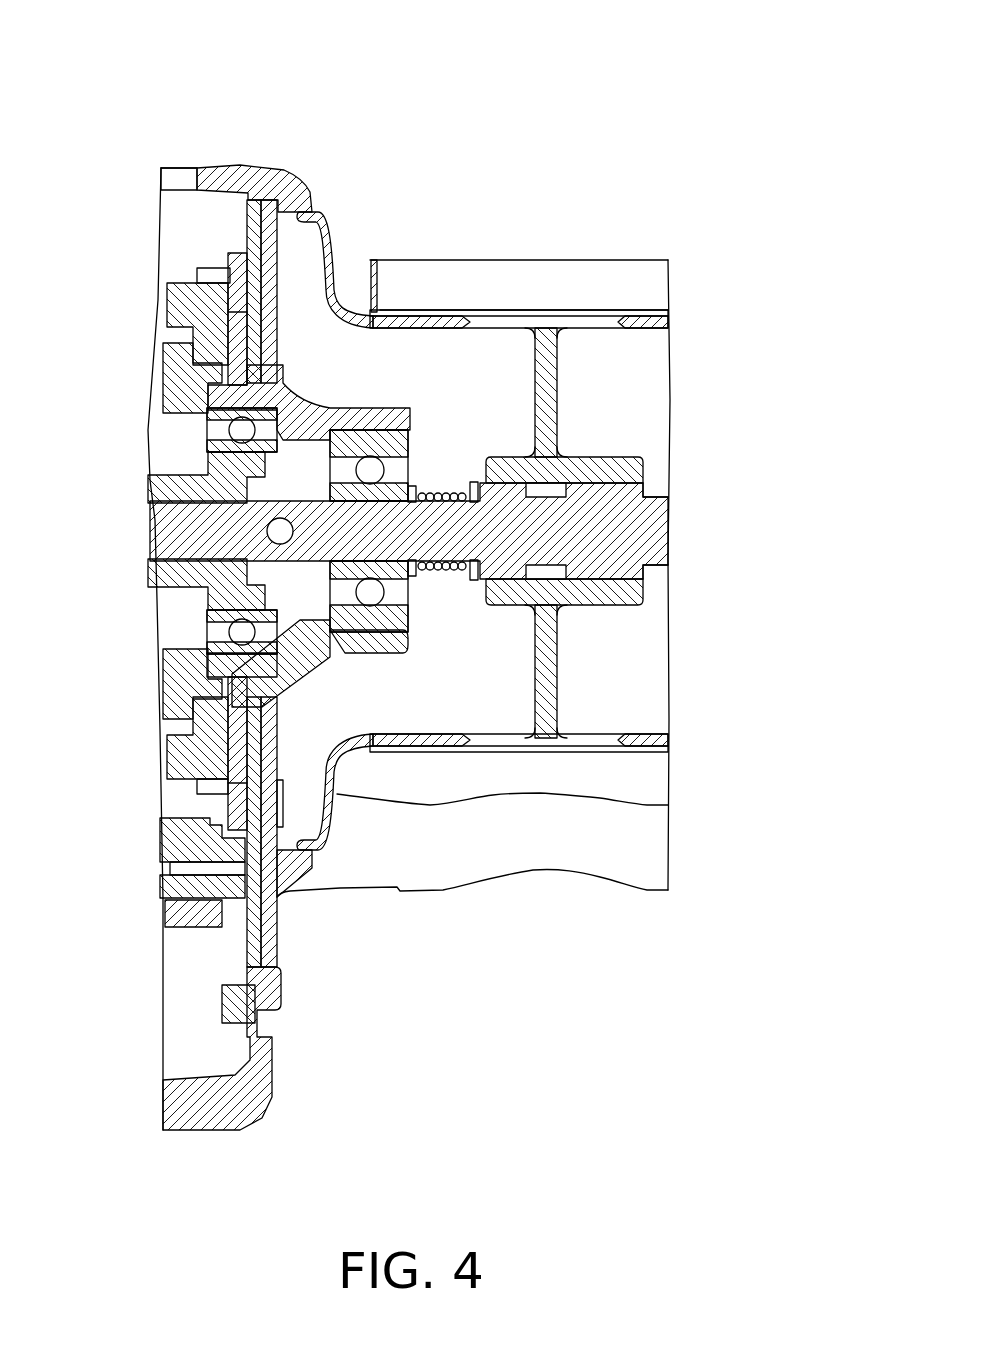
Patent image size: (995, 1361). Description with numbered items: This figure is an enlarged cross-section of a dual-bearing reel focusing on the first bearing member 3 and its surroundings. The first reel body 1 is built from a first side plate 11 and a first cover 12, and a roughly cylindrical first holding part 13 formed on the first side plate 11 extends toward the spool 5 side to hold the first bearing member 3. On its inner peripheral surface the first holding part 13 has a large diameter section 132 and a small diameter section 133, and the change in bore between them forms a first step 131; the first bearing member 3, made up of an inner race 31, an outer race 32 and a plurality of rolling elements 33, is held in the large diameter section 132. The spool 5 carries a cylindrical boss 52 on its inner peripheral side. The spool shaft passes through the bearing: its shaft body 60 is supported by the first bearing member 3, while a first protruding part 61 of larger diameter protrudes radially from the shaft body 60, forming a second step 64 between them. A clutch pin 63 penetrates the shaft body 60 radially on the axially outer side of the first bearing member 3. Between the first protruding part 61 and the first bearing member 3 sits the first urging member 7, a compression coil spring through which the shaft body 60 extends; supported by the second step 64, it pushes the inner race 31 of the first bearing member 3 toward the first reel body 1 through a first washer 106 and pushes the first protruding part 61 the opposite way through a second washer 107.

The first reel body 1 is at (217, 142).
The first bearing member 3 is at (393, 646).
The spool 5 is at (636, 318).
The first urging member 7 is at (468, 492).
The first side plate 11 is at (265, 165).
The first cover 12 is at (178, 166).
The first holding part 13 is at (384, 332).
The inner race 31 is at (397, 572).
The outer race 32 is at (363, 622).
The rolling elements 33 is at (356, 598).
The boss 52 is at (580, 457).
The shaft body 60 is at (462, 570).
The first protruding part 61 is at (615, 490).
The clutch pin 63 is at (280, 531).
The second step 64 is at (467, 517).
The first washer 106 is at (414, 486).
The second washer 107 is at (525, 328).
The first step 131 is at (378, 318).
The large diameter section 132 is at (372, 440).
The small diameter section 133 is at (260, 480).